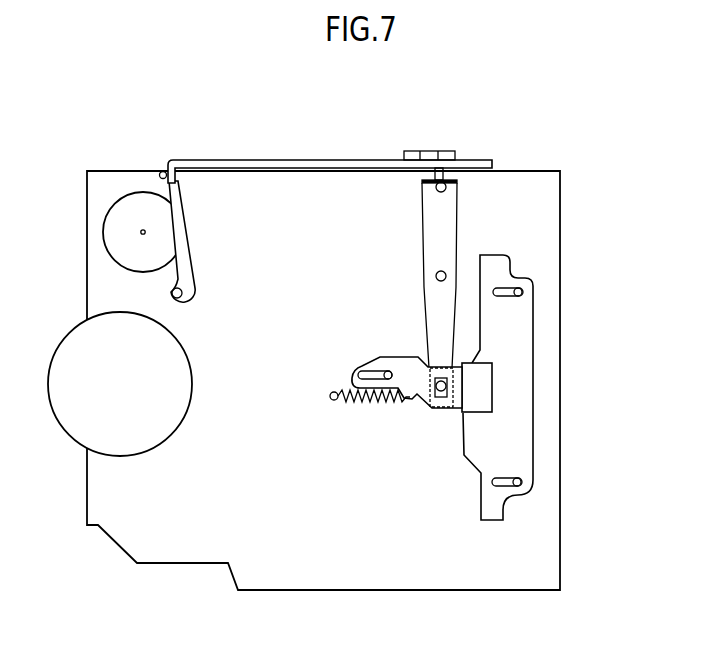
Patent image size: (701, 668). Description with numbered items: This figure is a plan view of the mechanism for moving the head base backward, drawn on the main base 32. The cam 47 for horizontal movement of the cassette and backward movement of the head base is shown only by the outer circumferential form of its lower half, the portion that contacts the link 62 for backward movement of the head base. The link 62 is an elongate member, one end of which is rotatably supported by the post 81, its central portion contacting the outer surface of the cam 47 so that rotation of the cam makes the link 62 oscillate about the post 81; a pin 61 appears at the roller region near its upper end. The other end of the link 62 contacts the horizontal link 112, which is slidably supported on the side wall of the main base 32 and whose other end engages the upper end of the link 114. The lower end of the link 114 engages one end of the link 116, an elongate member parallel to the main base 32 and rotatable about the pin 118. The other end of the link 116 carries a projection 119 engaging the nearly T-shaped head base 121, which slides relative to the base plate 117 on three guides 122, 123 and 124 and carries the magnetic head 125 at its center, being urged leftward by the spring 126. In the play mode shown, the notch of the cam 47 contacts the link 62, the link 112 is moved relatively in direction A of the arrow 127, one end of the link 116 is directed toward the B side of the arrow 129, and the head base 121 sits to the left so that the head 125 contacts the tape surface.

The main base 32 is at (125, 178).
The cam for horizontal movement of the cassette and backward movement of the head ba 47 is at (102, 238).
The lever 61 is at (175, 257).
The link for backward movement of the head base 62 is at (187, 225).
The post 81 is at (187, 300).
The link 112 is at (320, 158).
The link 114 is at (433, 150).
The link 116 is at (422, 215).
The base plate 117 is at (502, 583).
The pin 118 is at (436, 277).
The projection 119 is at (433, 402).
The head base 121 is at (527, 380).
The guide 122 is at (528, 283).
The guide 123 is at (522, 482).
The guide 124 is at (393, 357).
The magnetic head 125 is at (473, 400).
The spring 126 is at (352, 400).
The arrow 127 is at (247, 143).
The arrow 129 is at (470, 190).